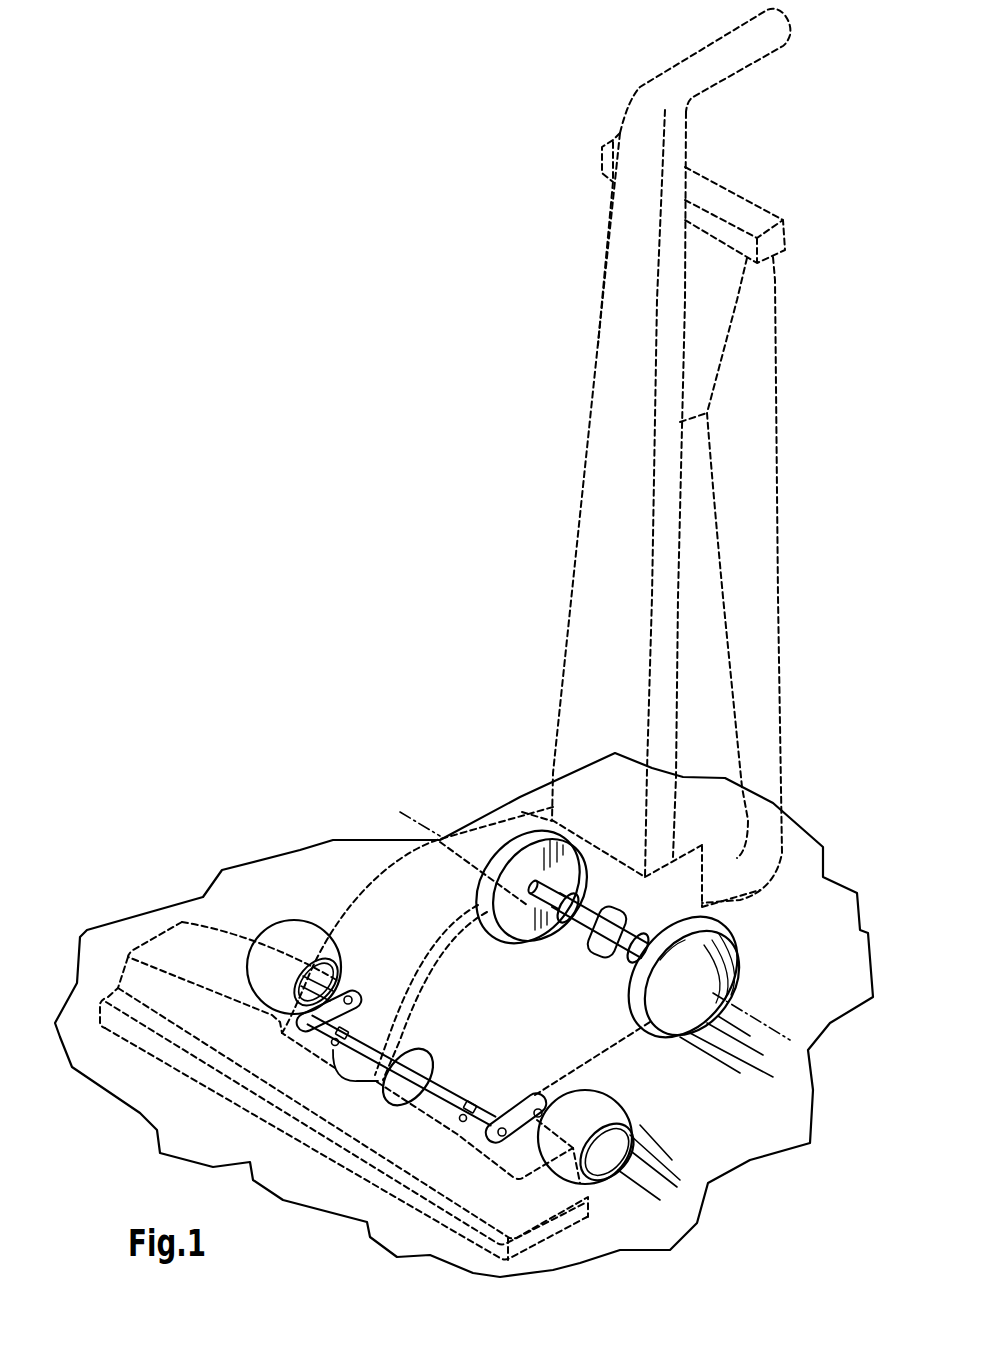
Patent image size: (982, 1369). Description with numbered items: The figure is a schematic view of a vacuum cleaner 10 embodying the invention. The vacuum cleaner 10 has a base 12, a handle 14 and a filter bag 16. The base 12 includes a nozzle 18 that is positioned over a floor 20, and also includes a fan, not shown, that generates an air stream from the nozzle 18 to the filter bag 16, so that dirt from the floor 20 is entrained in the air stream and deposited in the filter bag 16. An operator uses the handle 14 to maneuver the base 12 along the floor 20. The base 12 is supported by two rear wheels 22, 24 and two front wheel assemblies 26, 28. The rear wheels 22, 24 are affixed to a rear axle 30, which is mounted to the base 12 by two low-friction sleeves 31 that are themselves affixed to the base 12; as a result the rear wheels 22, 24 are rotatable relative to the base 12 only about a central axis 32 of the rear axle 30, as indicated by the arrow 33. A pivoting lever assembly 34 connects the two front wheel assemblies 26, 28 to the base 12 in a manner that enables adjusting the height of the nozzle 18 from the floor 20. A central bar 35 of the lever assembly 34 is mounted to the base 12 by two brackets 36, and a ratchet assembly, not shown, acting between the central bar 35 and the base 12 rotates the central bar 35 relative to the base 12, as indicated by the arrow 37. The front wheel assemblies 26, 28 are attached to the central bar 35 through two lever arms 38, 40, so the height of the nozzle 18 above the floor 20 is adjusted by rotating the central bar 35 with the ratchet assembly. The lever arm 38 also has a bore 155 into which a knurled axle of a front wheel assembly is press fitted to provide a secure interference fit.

The vacuum cleaner 10 is at (812, 295).
The base 12 is at (382, 853).
The handle 14 is at (707, 415).
The filter bag 16 is at (768, 480).
The nozzle 18 is at (357, 1180).
The floor 20 is at (653, 1227).
The rear wheel 22 is at (510, 828).
The rear wheel 24 is at (740, 947).
The front wheel assembly 26 is at (299, 918).
The front wheel assembly 28 is at (609, 1094).
The rear axle 30 is at (586, 900).
The low-friction sleeve 31 is at (575, 895).
The central axis 32 is at (757, 1017).
The arrow 33 is at (587, 963).
The pivoting lever assembly 34 is at (427, 985).
The central bar 35 is at (455, 1105).
The bracket 36 is at (336, 1046).
The arrow 37 is at (416, 1048).
The lever arm 38 is at (343, 995).
The lever arm 40 is at (512, 1100).
The bore 155 is at (353, 1000).